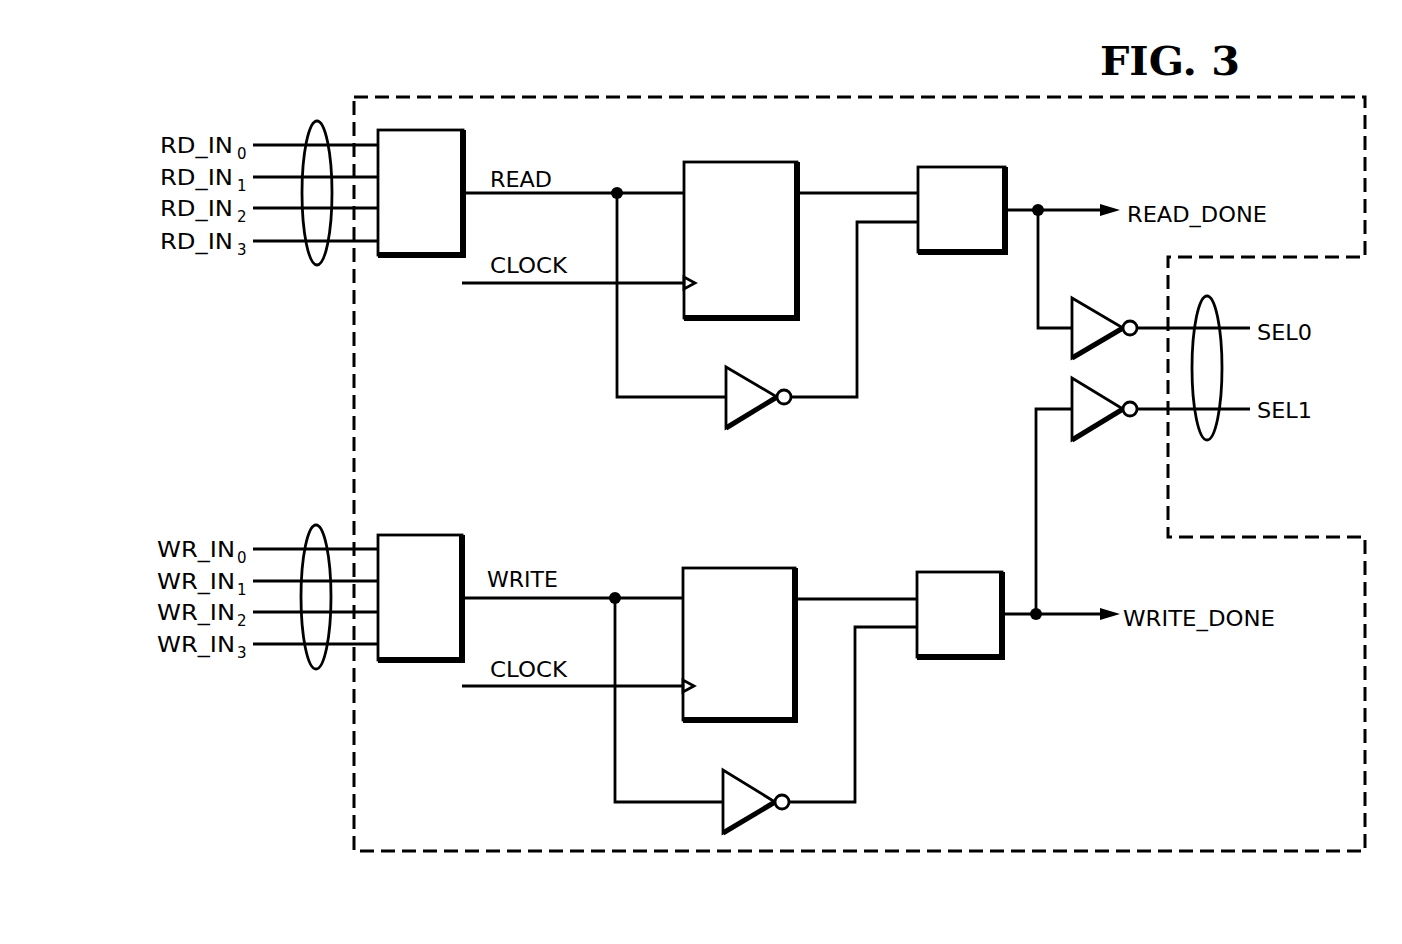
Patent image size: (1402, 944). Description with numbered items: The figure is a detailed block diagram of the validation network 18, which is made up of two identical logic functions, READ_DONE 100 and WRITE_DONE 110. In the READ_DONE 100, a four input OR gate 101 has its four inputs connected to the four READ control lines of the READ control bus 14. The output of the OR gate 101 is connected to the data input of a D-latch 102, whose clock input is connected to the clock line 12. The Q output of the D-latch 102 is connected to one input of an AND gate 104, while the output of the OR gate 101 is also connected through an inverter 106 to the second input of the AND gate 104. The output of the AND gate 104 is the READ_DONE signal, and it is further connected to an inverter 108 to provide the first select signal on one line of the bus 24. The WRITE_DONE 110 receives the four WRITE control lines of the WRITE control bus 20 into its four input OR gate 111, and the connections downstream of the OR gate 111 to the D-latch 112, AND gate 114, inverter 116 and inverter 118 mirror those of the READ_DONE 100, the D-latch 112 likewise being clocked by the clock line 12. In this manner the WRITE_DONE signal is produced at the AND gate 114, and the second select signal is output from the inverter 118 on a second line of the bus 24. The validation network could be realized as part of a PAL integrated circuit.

The clock line 12 is at (503, 285).
The READ control bus 14 is at (317, 123).
The validation network 18 is at (574, 76).
The WRITE control bus 20 is at (316, 527).
The bus 24 is at (1207, 440).
The READ_DONE 100 is at (841, 165).
The four input OR gate 101 is at (466, 142).
The D-latch 102 is at (770, 320).
The AND gate 104 is at (1004, 172).
The inverter 106 is at (753, 417).
The inverter 108 is at (1074, 298).
The WRITE_DONE 110 is at (939, 757).
The four input OR gate 111 is at (466, 540).
The D-LATCH 112 is at (797, 568).
The AND gate 114 is at (947, 572).
The inverter 116 is at (743, 778).
The inverter 118 is at (1070, 395).